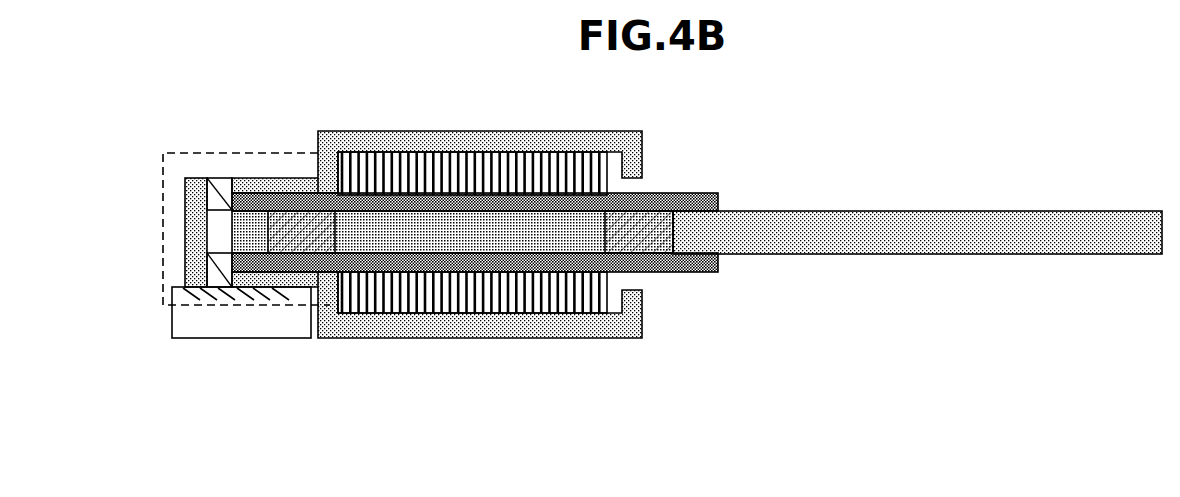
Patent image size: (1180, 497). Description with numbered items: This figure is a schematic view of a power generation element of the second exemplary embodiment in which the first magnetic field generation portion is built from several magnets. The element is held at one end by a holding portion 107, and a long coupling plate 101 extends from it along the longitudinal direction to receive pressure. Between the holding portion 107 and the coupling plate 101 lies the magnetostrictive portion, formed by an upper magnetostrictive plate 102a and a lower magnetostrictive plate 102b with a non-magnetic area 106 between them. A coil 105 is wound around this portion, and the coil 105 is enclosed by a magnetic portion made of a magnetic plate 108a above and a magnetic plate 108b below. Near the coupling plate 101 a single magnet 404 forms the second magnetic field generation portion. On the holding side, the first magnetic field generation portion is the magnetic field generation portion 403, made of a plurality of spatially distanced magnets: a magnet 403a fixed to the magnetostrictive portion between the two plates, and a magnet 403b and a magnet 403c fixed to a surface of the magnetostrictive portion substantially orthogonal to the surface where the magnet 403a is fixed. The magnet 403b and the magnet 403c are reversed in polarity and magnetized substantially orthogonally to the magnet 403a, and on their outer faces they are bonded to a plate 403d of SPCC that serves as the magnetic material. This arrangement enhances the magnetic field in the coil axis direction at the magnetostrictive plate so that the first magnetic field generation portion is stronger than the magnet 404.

The coupling plate 101 is at (988, 220).
The magnetostrictive plate 102a is at (703, 193).
The magnetostrictive plate 102b is at (690, 273).
The coil 105 is at (458, 160).
The non-magnetic area 106 is at (437, 245).
The holding portion 107 is at (280, 327).
The magnetic plate 108a is at (584, 140).
The magnetic plate 108b is at (553, 327).
The magnetic field generation portion 403 is at (183, 153).
The magnet 403a is at (290, 193).
The magnet 403b is at (222, 185).
The magnet 403c is at (207, 289).
The plate 403d is at (185, 235).
The magnet 404 is at (662, 215).